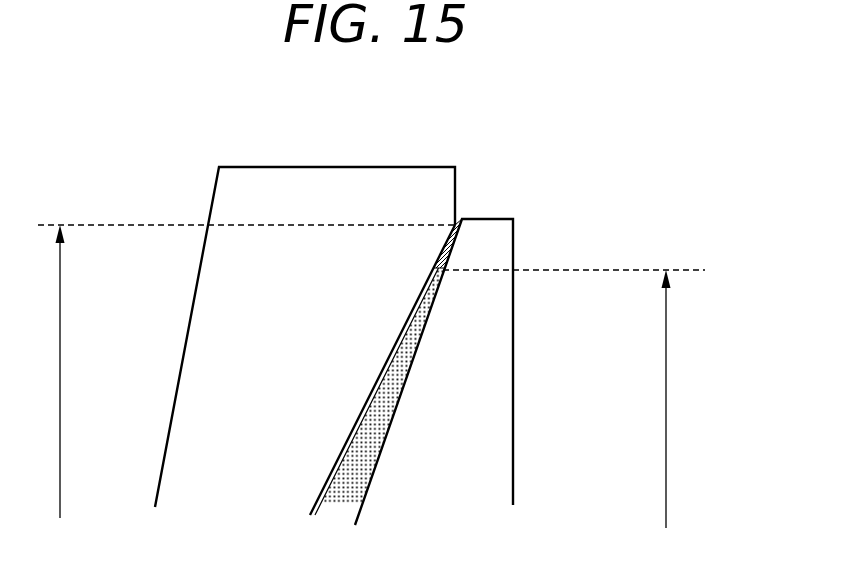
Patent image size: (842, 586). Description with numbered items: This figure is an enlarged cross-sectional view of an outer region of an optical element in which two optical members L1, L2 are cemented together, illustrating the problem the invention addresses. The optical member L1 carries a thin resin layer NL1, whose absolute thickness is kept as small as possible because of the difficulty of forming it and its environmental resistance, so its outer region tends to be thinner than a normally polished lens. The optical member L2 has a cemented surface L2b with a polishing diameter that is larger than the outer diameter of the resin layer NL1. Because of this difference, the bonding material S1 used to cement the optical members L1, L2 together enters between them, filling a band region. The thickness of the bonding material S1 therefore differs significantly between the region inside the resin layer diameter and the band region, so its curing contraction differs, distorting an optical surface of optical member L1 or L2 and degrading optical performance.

The optical member L2 is at (212, 300).
The cemented surface L2b is at (420, 297).
The optical member L1 is at (477, 422).
The bonding material S1 is at (433, 300).
The resin layer NL1 is at (410, 347).